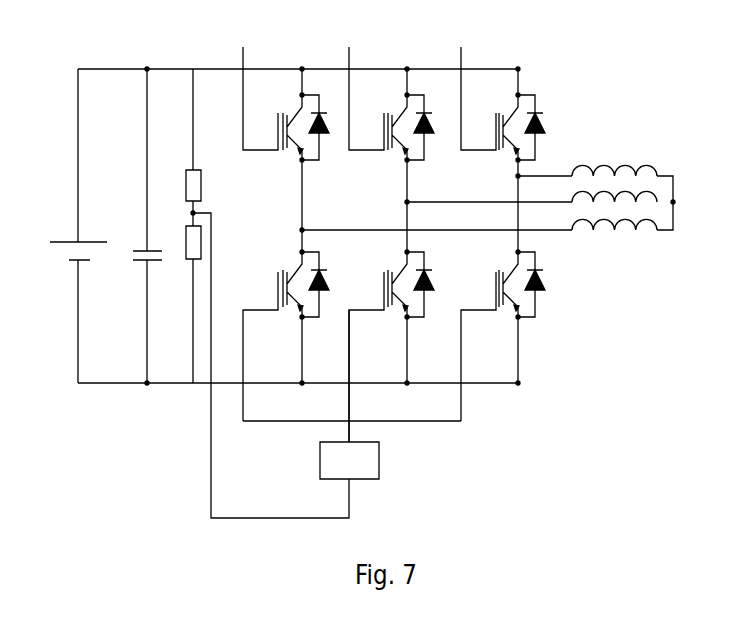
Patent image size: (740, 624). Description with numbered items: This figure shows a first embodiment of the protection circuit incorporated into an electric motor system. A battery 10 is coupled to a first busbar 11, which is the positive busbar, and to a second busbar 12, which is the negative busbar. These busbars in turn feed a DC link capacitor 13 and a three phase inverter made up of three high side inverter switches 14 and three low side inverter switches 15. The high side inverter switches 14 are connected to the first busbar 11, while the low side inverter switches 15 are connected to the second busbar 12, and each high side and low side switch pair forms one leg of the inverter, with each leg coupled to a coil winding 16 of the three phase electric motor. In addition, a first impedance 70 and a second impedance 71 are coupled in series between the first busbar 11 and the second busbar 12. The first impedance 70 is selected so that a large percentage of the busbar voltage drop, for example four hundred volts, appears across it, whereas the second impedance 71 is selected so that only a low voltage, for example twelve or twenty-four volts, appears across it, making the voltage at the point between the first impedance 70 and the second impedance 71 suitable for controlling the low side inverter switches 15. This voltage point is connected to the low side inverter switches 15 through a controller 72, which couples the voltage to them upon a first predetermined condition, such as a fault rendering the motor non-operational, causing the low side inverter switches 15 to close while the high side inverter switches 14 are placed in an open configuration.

The battery 10 is at (66, 238).
The first busbar 11 is at (115, 68).
The second busbar 12 is at (100, 384).
The DC link capacitor 13 is at (153, 249).
The high side inverter switch 14 is at (314, 98).
The low side inverter switch 15 is at (317, 262).
The coil winding 16 is at (613, 165).
The first impedance 70 is at (200, 186).
The second impedance 71 is at (198, 240).
The controller 72 is at (380, 458).